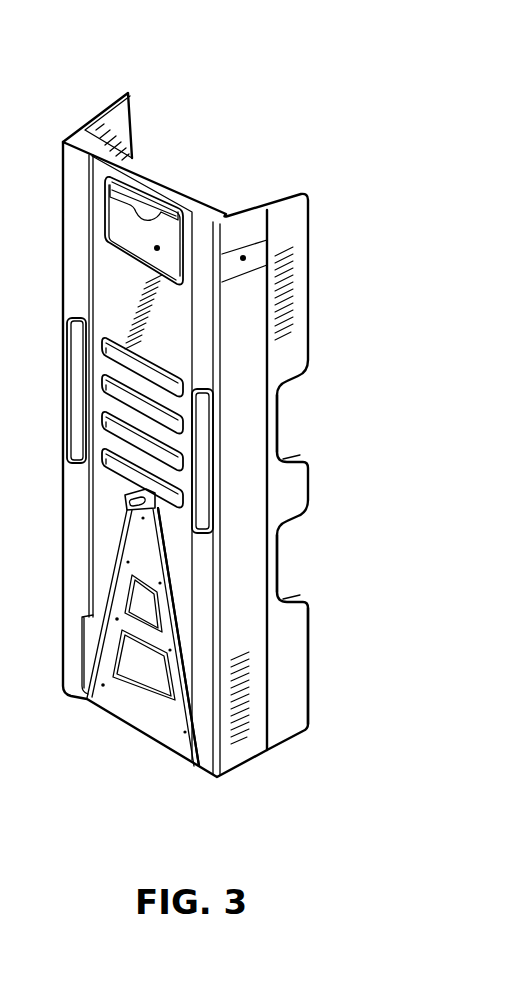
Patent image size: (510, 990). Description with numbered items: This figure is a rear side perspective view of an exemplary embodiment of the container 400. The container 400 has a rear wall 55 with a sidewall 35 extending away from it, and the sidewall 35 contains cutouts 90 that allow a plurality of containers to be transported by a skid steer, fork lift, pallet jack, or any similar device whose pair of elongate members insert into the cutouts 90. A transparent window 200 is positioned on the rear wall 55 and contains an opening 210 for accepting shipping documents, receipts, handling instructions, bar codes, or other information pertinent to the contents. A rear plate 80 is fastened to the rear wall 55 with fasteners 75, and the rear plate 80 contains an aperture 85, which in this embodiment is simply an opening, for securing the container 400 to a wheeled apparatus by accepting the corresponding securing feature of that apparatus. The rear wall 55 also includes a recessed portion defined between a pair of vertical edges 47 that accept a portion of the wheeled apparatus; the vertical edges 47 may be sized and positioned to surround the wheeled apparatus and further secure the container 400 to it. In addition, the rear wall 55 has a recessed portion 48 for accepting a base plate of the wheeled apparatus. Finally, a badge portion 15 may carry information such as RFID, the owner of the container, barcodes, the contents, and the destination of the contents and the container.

The container 400 is at (240, 98).
The badge portion 15 is at (246, 258).
The sidewall 35 is at (288, 670).
The vertical edges 47 is at (100, 299).
The recessed portion 48 is at (187, 697).
The rear wall 55 is at (123, 280).
The fasteners 75 is at (114, 623).
The rear plate 80 is at (132, 712).
The aperture 85 is at (118, 509).
The cutouts 90 is at (302, 421).
The transparent window 200 is at (154, 248).
The opening 210 is at (143, 208).